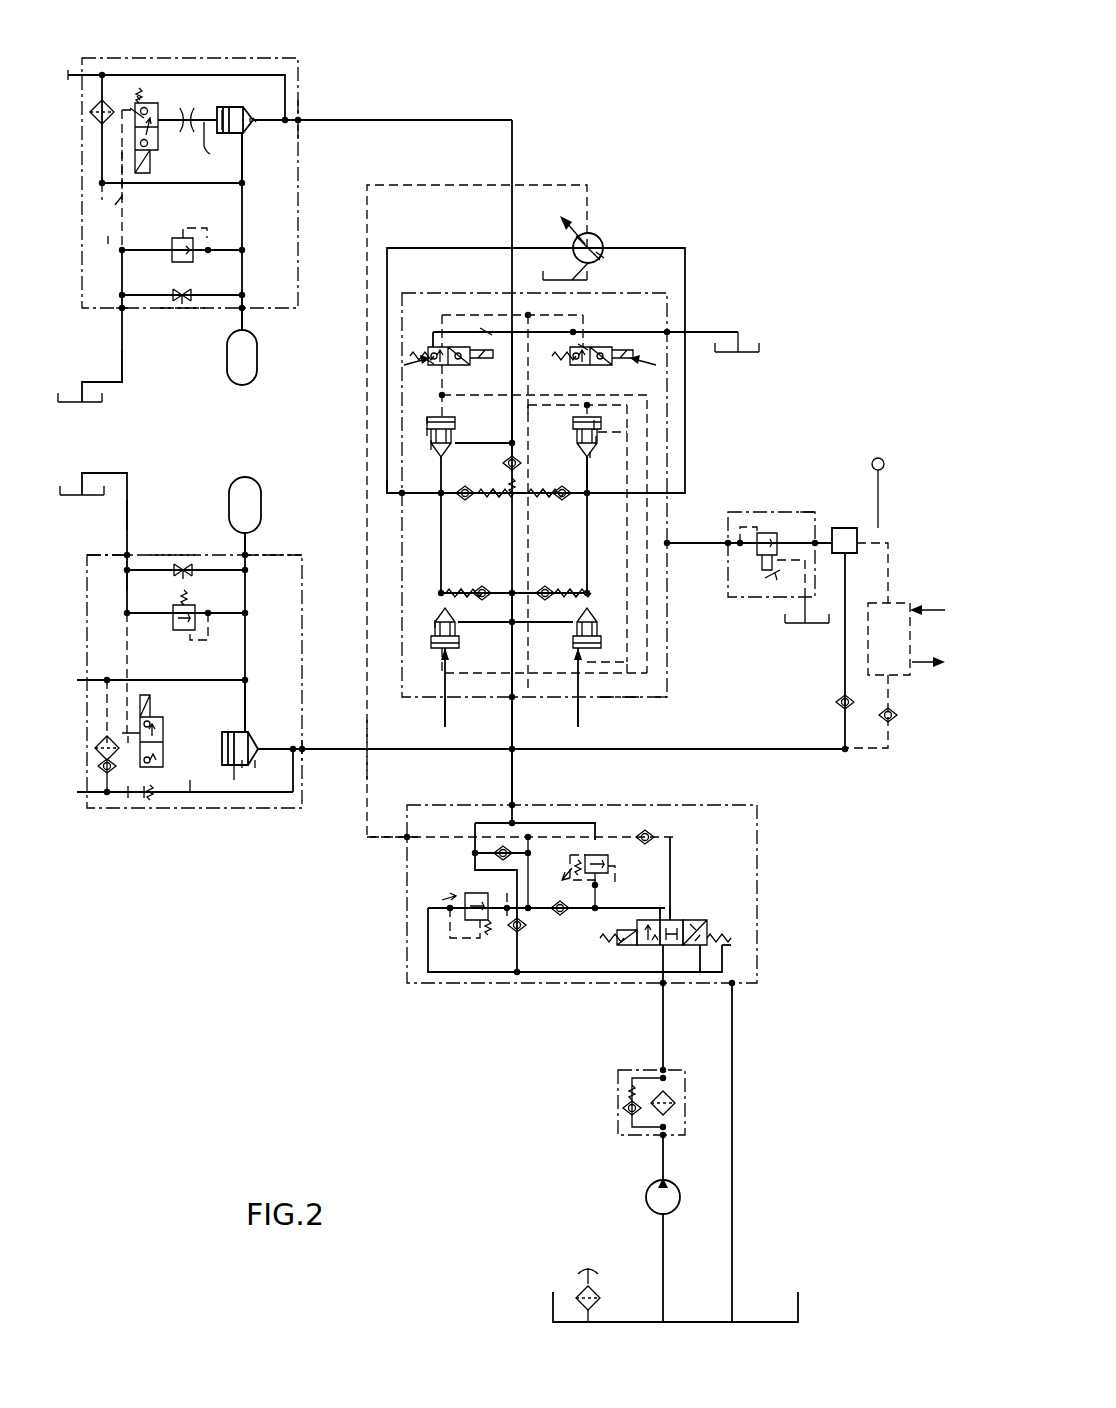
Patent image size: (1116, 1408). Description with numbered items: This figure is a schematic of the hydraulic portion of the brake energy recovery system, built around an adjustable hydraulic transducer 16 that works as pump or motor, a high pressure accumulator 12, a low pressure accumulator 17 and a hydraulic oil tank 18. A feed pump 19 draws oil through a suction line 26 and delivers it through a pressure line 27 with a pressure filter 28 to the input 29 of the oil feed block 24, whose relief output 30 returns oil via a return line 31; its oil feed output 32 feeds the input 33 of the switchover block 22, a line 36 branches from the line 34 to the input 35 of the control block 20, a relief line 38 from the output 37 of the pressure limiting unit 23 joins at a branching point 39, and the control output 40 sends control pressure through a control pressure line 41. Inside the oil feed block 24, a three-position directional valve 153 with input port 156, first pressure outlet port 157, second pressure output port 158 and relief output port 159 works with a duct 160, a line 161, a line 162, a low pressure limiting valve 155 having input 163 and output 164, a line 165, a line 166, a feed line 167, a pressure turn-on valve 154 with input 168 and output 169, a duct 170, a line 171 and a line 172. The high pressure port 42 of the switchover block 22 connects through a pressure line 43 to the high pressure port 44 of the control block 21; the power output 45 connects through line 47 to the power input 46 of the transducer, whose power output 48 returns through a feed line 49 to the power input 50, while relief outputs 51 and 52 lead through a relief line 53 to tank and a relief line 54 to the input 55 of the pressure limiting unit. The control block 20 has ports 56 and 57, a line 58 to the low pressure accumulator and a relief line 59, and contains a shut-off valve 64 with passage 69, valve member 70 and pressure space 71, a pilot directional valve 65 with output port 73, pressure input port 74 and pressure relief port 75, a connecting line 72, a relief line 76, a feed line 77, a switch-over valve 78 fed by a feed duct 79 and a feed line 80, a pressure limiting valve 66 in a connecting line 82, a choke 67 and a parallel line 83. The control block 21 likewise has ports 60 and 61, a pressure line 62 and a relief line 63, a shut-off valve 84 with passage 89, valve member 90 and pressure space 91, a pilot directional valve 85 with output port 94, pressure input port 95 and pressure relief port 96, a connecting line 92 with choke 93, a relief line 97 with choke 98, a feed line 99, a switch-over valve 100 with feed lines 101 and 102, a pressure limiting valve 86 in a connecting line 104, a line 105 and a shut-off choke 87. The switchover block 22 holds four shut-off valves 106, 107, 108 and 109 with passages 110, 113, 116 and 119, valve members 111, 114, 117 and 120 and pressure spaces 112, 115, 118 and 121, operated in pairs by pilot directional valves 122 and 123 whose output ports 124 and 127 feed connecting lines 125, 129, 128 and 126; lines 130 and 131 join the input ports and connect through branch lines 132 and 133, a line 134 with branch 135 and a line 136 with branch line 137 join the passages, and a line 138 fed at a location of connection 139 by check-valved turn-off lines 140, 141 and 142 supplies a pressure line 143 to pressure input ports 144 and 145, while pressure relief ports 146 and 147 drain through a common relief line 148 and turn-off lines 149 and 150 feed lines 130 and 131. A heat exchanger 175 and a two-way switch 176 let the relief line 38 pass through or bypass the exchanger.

The high pressure accumulator 12 is at (257, 357).
The hydraulic transducer 16 is at (596, 233).
The low pressure accumulator 17 is at (234, 490).
The hydraulic oil tank 18 is at (108, 405).
The feed pump 19 is at (646, 1198).
The control block 20 is at (172, 540).
The control block 21 is at (182, 312).
The switchover block 22 is at (680, 694).
The pressure limiting unit 23 is at (812, 500).
The oil feed block 24 is at (400, 992).
The suction line 26 is at (660, 1245).
The pressure line 27 is at (660, 1160).
The pressure filter 28 is at (618, 1105).
The input 29 is at (666, 1000).
The relief output 30 is at (745, 985).
The return line 31 is at (734, 1095).
The oil feed output 32 is at (516, 806).
The input 33 is at (516, 698).
The line 34 is at (512, 766).
The input 35 is at (304, 754).
The line 36 is at (390, 749).
The output 37 is at (834, 526).
The relief line 38 is at (790, 750).
The branching point 39 is at (512, 749).
The control output 40 is at (404, 840).
The control pressure line 41 is at (466, 185).
The high pressure port 42 is at (510, 292).
The pressure line 43 is at (392, 118).
The high pressure port 44 is at (300, 118).
The power output 45 is at (390, 495).
The power input 46 is at (565, 225).
The line 47 is at (473, 248).
The power output 48 is at (601, 256).
The feed line 49 is at (660, 248).
The power input 50 is at (742, 512).
The relief output 51 is at (668, 330).
The relief output 52 is at (674, 546).
The relief line 53 is at (700, 332).
The relief line 54 is at (705, 548).
The input 55 is at (750, 548).
The port 56 is at (250, 558).
The port 57 is at (122, 554).
The line 58 is at (248, 545).
The relief line 59 is at (127, 515).
The port 60 is at (246, 302).
The port 61 is at (120, 310).
The pressure line 62 is at (246, 318).
The relief line 63 is at (122, 358).
The shut-off valve 64 is at (258, 772).
The 3/2-way valve 65 is at (150, 778).
The pressure limiting valve 66 is at (176, 628).
The choke 67 is at (192, 576).
The passage 69 is at (246, 770).
The valve member 70 is at (252, 768).
The pressure space 71 is at (234, 775).
The connecting line 72 is at (192, 800).
The output port 73 is at (156, 740).
The pressure input port 74 is at (140, 752).
The pressure relief port 75 is at (148, 790).
The relief line 76 is at (125, 638).
The feed line 77 is at (132, 790).
The switch-over valve 78 is at (98, 763).
The feed duct 79 is at (90, 790).
The feed line 80 is at (107, 708).
The connecting line 82 is at (209, 628).
The line 83 is at (150, 572).
The shut-off valve 84 is at (236, 100).
The 3/2-way valve 85 is at (148, 96).
The pressure limiting valve 86 is at (180, 238).
The shut-off choke 87 is at (190, 292).
The passage 89 is at (250, 124).
The valve member 90 is at (256, 112).
The pressure space 91 is at (227, 100).
The connecting line 92 is at (207, 132).
The choke 93 is at (187, 106).
The output port 94 is at (160, 140).
The pressure input port 95 is at (122, 150).
The pressure relief port 96 is at (139, 92).
The relief line 97 is at (122, 240).
The choke 98 is at (107, 202).
The feed line 99 is at (136, 112).
The switch-over valve 100 is at (92, 118).
The feed line 101 is at (98, 78).
The feed line 102 is at (246, 185).
The connecting line 104 is at (246, 250).
The line 105 is at (122, 295).
The shut-off valve 106 is at (458, 432).
The shut-off valve 107 is at (578, 432).
The shut-off valve 108 is at (579, 700).
The shut-off valve 109 is at (447, 700).
The passage 110 is at (428, 432).
The valve member 111 is at (427, 447).
The pressure space 112 is at (428, 420).
The passage 113 is at (600, 440).
The valve member 114 is at (596, 455).
The pressure space 115 is at (598, 425).
The valve passage 116 is at (601, 640).
The valve member 117 is at (600, 632).
The pressure space 118 is at (627, 660).
The valve passage 119 is at (431, 617).
The valve member 120 is at (430, 610).
The pressure space 121 is at (431, 645).
The 3/2-way valve 122 is at (428, 355).
The 3/2-way valve 123 is at (633, 360).
The output port 124 is at (428, 362).
The connecting line 125 is at (440, 396).
The connecting line 126 is at (618, 698).
The output port 127 is at (572, 366).
The connecting line 128 is at (615, 366).
The connecting line 129 is at (645, 675).
The line 130 is at (457, 588).
The line 131 is at (585, 572).
The branch line 132 is at (440, 500).
The branch line 133 is at (596, 490).
The line 134 is at (468, 490).
The branch 135 is at (512, 377).
The line 136 is at (490, 622).
The branch line 137 is at (514, 660).
The line 138 is at (589, 545).
The location of connection 139 is at (513, 590).
The turn-off line 140 is at (446, 588).
The turn-off line 141 is at (520, 462).
The turn-off line 142 is at (566, 500).
The pressure line 143 is at (528, 410).
The pressure input port 144 is at (446, 350).
The pressure input port 145 is at (582, 352).
The pressure relief port 146 is at (433, 332).
The pressure relief port 147 is at (578, 350).
The common relief line 148 is at (486, 333).
The turn-off line 149 is at (465, 590).
The turn-off line 150 is at (588, 590).
The 4/3-way valve 153 is at (640, 942).
The pressure turn-on valve 154 is at (612, 852).
The low pressure limiting valve 155 is at (447, 907).
The input port 156 is at (664, 935).
The first pressure outlet port 157 is at (692, 920).
The second pressure output port 158 is at (710, 935).
The relief output port 159 is at (698, 950).
The duct 160 is at (740, 950).
The line 161 is at (676, 838).
The line 162 is at (665, 918).
The input 163 is at (492, 938).
The output 164 is at (426, 947).
The line 165 is at (426, 972).
The line 166 is at (532, 867).
The feed line 167 is at (562, 920).
The input 168 is at (610, 872).
The output 169 is at (530, 825).
The duct 170 is at (510, 824).
The line 171 is at (517, 938).
The line 172 is at (498, 850).
The heat exchanger 175 is at (872, 641).
The two-way switch 176 is at (876, 455).